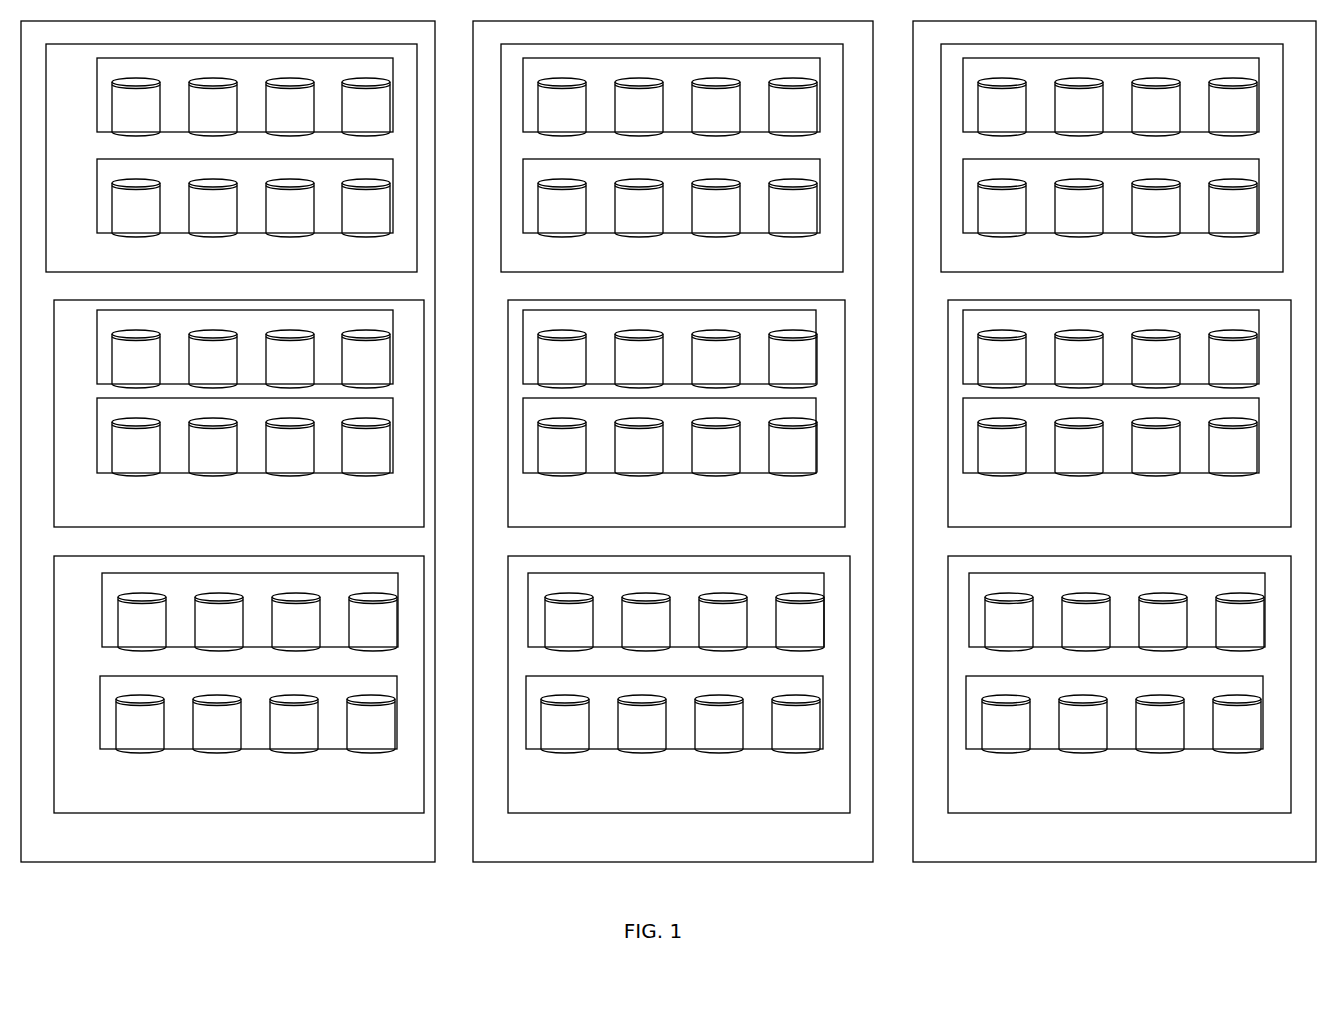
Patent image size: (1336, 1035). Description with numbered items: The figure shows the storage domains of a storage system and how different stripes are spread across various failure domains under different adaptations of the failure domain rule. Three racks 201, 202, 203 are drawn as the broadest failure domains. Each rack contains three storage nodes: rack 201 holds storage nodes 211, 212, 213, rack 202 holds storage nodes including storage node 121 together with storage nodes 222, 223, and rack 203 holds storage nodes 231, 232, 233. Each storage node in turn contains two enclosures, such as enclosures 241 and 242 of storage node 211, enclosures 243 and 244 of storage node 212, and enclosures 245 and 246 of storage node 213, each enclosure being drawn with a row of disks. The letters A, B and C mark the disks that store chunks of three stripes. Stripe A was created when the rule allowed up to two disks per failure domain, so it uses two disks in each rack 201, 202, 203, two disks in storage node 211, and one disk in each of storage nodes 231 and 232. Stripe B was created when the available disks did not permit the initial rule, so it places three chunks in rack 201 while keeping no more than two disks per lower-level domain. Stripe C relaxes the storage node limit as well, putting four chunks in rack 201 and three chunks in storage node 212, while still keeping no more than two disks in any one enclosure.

The rack 201 is at (208, 851).
The rack 202 is at (647, 851).
The rack 203 is at (1087, 851).
The storage node 211 is at (215, 263).
The storage node 212 is at (218, 516).
The storage node 213 is at (218, 803).
The storage node 121 is at (655, 263).
The storage node 222 is at (654, 516).
The storage node 223 is at (656, 803).
The storage node 231 is at (1096, 263).
The storage node 232 is at (1098, 516).
The storage node 233 is at (1098, 803).
The enclosure 241 is at (98, 114).
The enclosure 242 is at (100, 214).
The enclosure 243 is at (59, 358).
The enclosure 244 is at (59, 449).
The enclosure 245 is at (103, 630).
The enclosure 246 is at (100, 722).